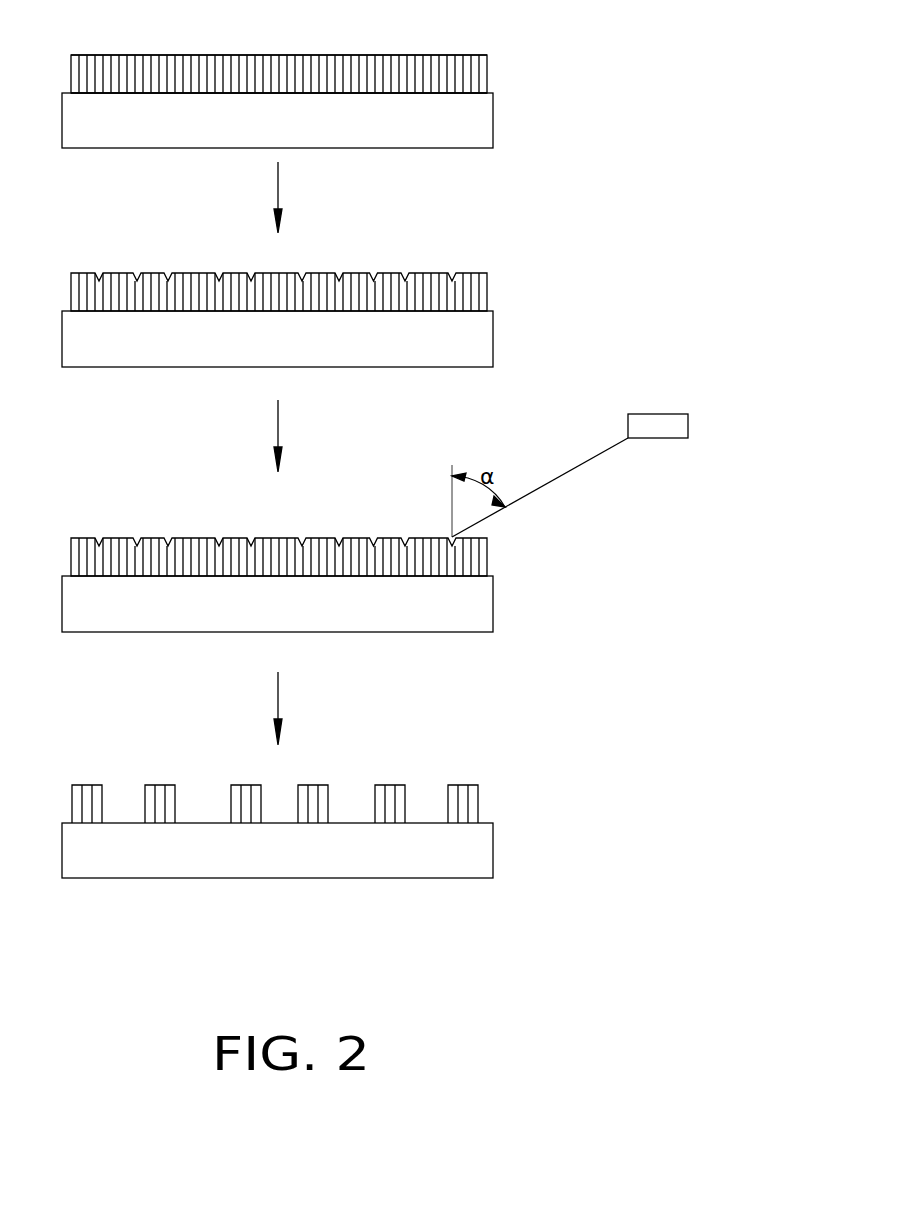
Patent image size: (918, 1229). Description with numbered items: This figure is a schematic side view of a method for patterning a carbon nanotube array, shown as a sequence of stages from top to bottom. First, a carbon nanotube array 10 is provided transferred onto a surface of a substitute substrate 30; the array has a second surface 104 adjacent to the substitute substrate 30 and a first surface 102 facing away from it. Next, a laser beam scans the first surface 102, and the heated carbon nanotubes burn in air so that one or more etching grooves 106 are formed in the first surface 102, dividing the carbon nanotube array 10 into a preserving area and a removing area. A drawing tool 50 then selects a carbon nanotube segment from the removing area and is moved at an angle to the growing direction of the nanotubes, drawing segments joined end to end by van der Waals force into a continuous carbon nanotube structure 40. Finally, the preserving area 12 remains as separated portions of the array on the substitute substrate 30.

The carbon nanotube array 10 is at (477, 77).
The first surface 102 is at (463, 55).
The second surface 104 is at (438, 93).
The substitute substrate 30 is at (485, 117).
The etching groove 106 is at (454, 268).
The carbon nanotube structure 40 is at (582, 467).
The drawing tool 50 is at (658, 423).
The preserving area 12 is at (472, 793).